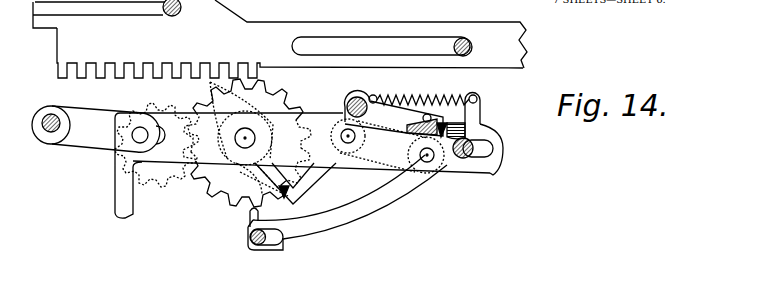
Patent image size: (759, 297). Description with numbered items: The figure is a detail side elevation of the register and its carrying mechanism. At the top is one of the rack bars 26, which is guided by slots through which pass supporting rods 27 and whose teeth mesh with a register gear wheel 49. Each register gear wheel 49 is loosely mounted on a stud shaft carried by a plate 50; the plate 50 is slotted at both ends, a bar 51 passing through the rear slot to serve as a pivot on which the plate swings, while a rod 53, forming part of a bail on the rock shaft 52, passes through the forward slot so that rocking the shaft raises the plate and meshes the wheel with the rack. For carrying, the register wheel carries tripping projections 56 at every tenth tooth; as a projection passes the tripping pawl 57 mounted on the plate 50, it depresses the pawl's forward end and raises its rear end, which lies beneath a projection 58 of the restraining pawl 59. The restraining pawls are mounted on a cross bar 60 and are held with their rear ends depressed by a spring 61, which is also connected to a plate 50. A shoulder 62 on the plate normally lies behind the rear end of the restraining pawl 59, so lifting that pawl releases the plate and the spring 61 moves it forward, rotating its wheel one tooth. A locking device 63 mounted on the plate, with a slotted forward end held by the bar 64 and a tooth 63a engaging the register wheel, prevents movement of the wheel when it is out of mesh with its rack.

The rack bar 26 is at (280, 39).
The supporting rod 27 is at (473, 47).
The register gear wheel 49 is at (247, 142).
The plate 50 is at (166, 145).
The bar 51 is at (463, 158).
The rock shaft 52 is at (50, 132).
The rod 53 is at (143, 130).
The tripping projection 56 is at (241, 179).
The tripping pawl 57 is at (309, 181).
The projection 58 is at (426, 115).
The restraining pawl 59 is at (390, 117).
The cross bar 60 is at (360, 97).
The spring 61 is at (472, 96).
The projection or shoulder 62 is at (443, 142).
The locking device 63 is at (347, 202).
The tooth 63a is at (248, 214).
The bar 64 is at (252, 240).